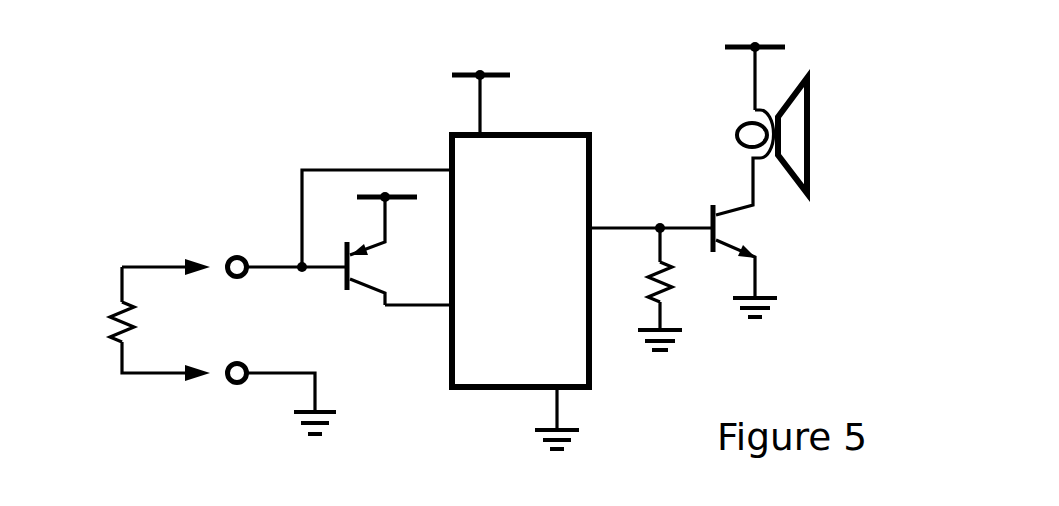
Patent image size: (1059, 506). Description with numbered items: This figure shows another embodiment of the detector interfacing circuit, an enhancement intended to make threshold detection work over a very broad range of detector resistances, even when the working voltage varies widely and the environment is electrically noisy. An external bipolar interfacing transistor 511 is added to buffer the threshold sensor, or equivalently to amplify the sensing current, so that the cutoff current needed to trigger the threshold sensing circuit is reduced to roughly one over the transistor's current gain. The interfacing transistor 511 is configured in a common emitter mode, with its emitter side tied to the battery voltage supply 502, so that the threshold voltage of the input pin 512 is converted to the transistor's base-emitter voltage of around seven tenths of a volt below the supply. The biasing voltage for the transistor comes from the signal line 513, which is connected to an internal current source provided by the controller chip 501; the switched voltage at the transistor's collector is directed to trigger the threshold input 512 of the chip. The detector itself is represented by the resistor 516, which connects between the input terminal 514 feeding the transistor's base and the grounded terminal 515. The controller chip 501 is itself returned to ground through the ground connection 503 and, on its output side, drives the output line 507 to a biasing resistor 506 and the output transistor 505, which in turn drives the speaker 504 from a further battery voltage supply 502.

The controller chip 501 is at (550, 165).
The battery voltage supply 502 is at (408, 197).
The ground connection 503 is at (558, 415).
The speaker 504 is at (808, 108).
The output transistor 505 is at (727, 220).
The bias resistor 506 is at (672, 290).
The output line 507 is at (623, 228).
The interfacing transistor 511 is at (368, 290).
The input pin 512 is at (428, 305).
The signal line 513 is at (335, 170).
The input terminal 514 is at (270, 265).
The ground terminal 515 is at (270, 376).
The input resistor / sensor 516 is at (105, 320).